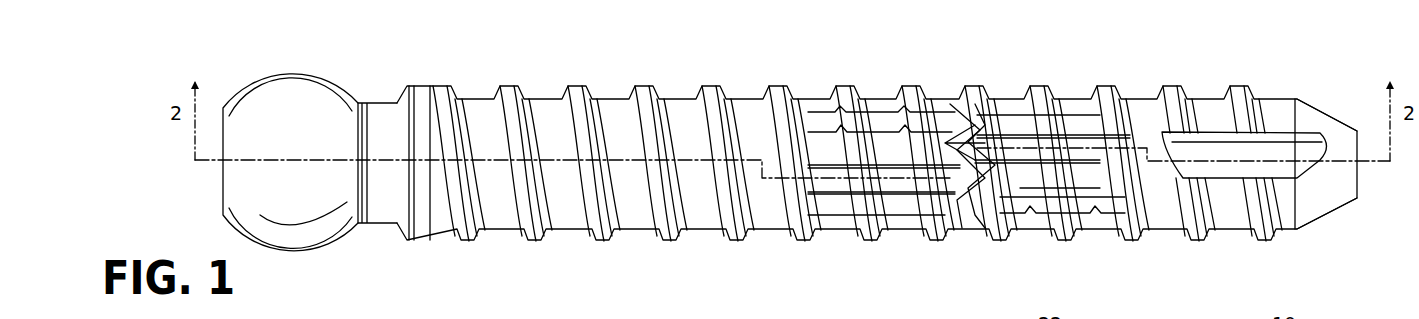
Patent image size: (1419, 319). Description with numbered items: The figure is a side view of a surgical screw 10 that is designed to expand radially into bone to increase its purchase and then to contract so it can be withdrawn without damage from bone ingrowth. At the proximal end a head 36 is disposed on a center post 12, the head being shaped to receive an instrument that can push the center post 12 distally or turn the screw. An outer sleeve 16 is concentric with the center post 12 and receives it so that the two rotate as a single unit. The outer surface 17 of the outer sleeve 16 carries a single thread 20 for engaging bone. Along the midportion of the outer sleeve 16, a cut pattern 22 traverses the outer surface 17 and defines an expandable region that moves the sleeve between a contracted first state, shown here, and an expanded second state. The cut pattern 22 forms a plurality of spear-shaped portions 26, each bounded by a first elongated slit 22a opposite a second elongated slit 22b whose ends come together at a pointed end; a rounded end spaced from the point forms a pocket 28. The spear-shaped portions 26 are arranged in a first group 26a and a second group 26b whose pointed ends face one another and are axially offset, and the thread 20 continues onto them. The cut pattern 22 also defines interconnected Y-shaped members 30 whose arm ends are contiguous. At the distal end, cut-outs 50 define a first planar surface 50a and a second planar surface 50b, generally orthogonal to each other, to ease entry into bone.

The surgical screw 10 is at (657, 60).
The center post 12 is at (319, 60).
The head 36 is at (296, 71).
The outer sleeve 16 is at (541, 84).
The outer surface 17 is at (736, 97).
The thread 20 is at (960, 108).
The cut pattern 22 is at (933, 58).
The first elongated slit 22a is at (848, 218).
The second elongated slit 22b is at (878, 140).
The spear-shaped portions 26 is at (942, 112).
The first group 26a is at (921, 112).
The second group 26b is at (1020, 185).
The pocket 28 is at (975, 125).
The Y-shaped members 30 is at (945, 143).
The cut-outs 50 is at (1307, 150).
The first planar surface 50a is at (1303, 165).
The second planar surface 50b is at (1250, 130).